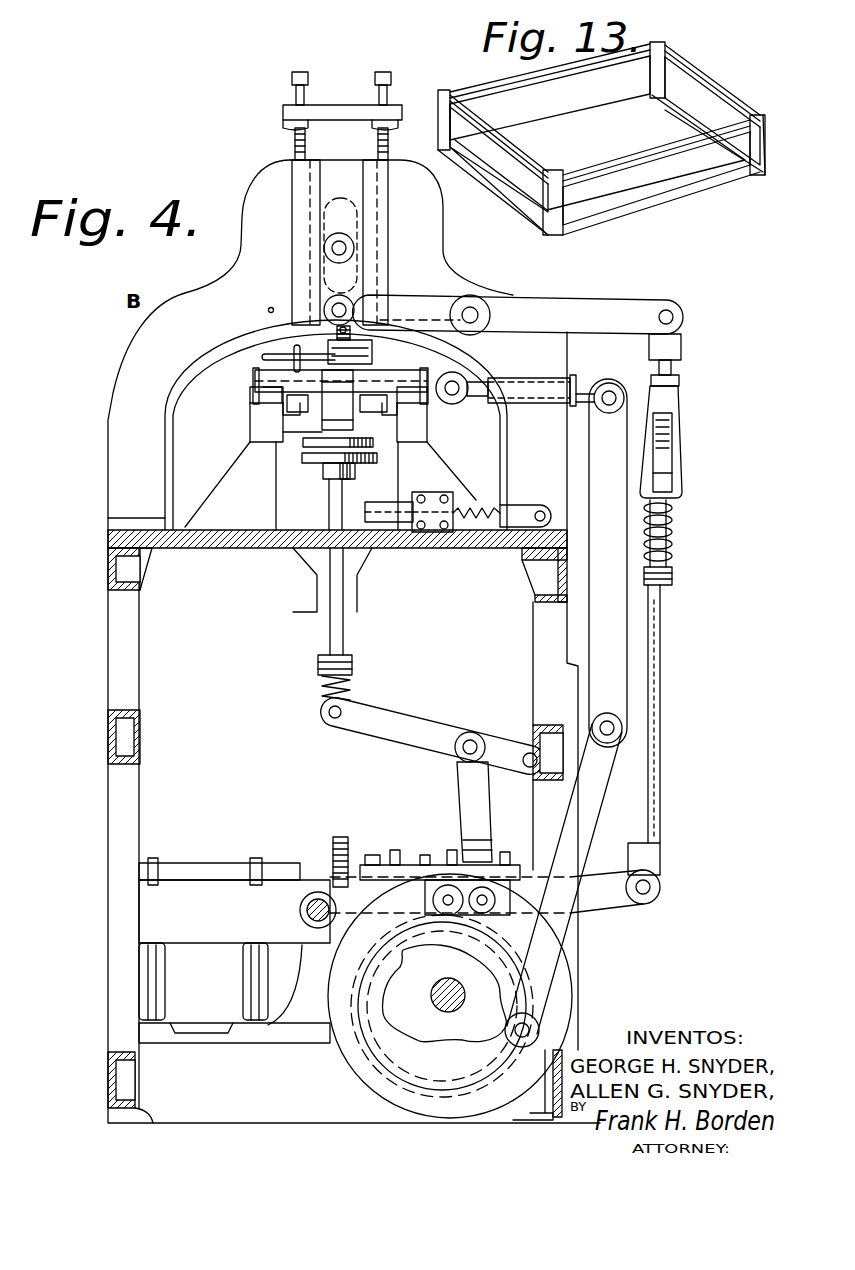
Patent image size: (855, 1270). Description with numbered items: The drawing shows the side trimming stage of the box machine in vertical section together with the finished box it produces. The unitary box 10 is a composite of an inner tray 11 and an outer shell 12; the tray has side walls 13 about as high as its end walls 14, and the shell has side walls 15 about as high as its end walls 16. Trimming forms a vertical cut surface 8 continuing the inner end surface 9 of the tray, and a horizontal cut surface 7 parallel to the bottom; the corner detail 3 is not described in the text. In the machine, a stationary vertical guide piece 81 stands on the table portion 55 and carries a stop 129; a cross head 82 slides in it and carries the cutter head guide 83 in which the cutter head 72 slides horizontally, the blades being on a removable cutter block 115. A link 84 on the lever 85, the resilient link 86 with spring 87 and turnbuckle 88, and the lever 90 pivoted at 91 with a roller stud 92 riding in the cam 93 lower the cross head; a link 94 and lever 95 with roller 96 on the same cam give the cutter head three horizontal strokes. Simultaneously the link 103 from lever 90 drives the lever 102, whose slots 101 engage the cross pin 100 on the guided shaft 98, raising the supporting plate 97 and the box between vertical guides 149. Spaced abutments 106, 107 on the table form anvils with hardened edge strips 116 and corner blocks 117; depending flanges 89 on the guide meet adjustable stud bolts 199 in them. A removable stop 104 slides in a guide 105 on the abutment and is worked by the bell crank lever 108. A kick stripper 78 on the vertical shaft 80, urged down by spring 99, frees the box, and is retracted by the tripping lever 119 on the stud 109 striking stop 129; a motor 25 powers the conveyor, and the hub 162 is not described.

In FIG. 13, the corner post 3 is at (758, 125).
In FIG. 13, the horizontal cut surface 7 is at (665, 150).
In FIG. 13, the vertical cut surface 8 is at (660, 46).
In FIG. 13, the inner end surface 9 is at (742, 118).
In FIG. 13, the unitary box 10 is at (668, 203).
In FIG. 13, the inner tray 11 is at (600, 152).
In FIG. 13, the outer shell 12 is at (548, 235).
In FIG. 13, the tray side walls 13 is at (505, 96).
In FIG. 13, the tray end walls 14 is at (672, 62).
In FIG. 13, the shell side walls 15 is at (650, 45).
In FIG. 13, the shell end walls 16 is at (735, 75).
In FIG. 4, the motor 25 is at (222, 856).
In FIG. 4, the table portion 55 is at (488, 546).
In FIG. 4, the cutter head 72 is at (397, 378).
In FIG. 4, the kick stripper 78 is at (322, 440).
In FIG. 4, the vertical shaft 80 is at (358, 345).
In FIG. 4, the stationary vertical guide piece 81 is at (417, 222).
In FIG. 4, the cross head 82 is at (344, 213).
In FIG. 4, the cutter head guide 83 is at (262, 366).
In FIG. 4, the link 84 is at (330, 267).
In FIG. 4, the lever 85 is at (518, 315).
In FIG. 4, the resilient link 86 is at (660, 672).
In FIG. 4, the spring 87 is at (668, 548).
In FIG. 4, the turnbuckle 88 is at (681, 475).
In FIG. 4, the depending flanges 89 is at (255, 384).
In FIG. 4, the lever 90 is at (612, 912).
In FIG. 4, the pivot 91 is at (298, 912).
In FIG. 4, the roller stud 92 is at (444, 916).
In FIG. 4, the cam 93 is at (372, 1077).
In FIG. 4, the link 94 is at (525, 388).
In FIG. 4, the lever 95 is at (608, 620).
In FIG. 4, the roller 96 is at (540, 1032).
In FIG. 4, the supporting plate 97 is at (352, 470).
In FIG. 4, the vertically guided shaft 98 is at (330, 512).
In FIG. 4, the spring 99 is at (350, 335).
In FIG. 4, the cross pin 100 is at (318, 700).
In FIG. 4, the slots 101 is at (322, 712).
In FIG. 4, the lever 102 is at (412, 728).
In FIG. 4, the link 103 is at (462, 783).
In FIG. 4, the removable stop 104 is at (383, 517).
In FIG. 4, the guide 105 is at (430, 548).
In FIG. 4, the abutment 106 is at (400, 445).
In FIG. 4, the abutment 107 is at (222, 476).
In FIG. 4, the bell crank lever 108 is at (518, 565).
In FIG. 4, the stud 109 is at (288, 355).
In FIG. 4, the cutter block 115 is at (369, 440).
In FIG. 4, the hardened edge strips 116 is at (275, 412).
In FIG. 4, the corner blocks 117 is at (262, 414).
In FIG. 4, the tripping lever 119 is at (290, 343).
In FIG. 4, the stop 129 is at (267, 309).
In FIG. 4, the vertical guides 149 is at (322, 428).
In FIG. 4, the hub 162 is at (470, 1030).
In FIG. 4, the adjustable stud bolts 199 is at (252, 402).